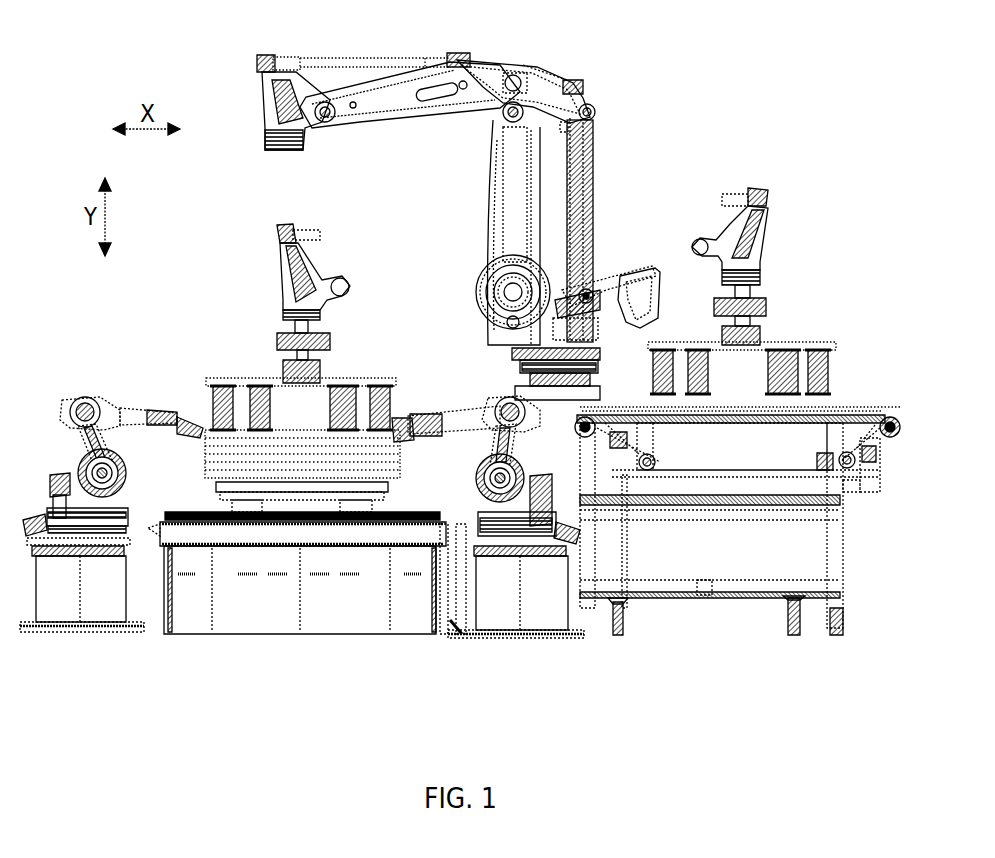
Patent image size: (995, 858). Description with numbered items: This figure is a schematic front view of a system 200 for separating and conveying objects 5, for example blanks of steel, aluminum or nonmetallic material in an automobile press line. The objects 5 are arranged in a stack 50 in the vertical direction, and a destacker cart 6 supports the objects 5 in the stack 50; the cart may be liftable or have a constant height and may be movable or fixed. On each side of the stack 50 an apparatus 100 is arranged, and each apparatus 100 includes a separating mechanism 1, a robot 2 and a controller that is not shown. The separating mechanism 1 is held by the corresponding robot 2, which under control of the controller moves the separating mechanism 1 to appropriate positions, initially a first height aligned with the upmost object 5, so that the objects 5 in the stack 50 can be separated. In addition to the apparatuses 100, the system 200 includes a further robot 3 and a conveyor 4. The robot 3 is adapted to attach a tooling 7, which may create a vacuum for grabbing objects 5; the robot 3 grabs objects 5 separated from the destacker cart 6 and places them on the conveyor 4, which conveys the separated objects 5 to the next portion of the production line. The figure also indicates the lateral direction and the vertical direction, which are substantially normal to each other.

The system 200 is at (142, 44).
The robot 3 is at (553, 70).
The apparatus 100 is at (72, 392).
The robot 2 is at (88, 396).
The separating mechanism 1 is at (200, 426).
The objects 5 is at (390, 452).
The tooling 7 is at (228, 376).
The stack 50 is at (204, 477).
The destacker cart 6 is at (330, 610).
The conveyor 4 is at (894, 418).